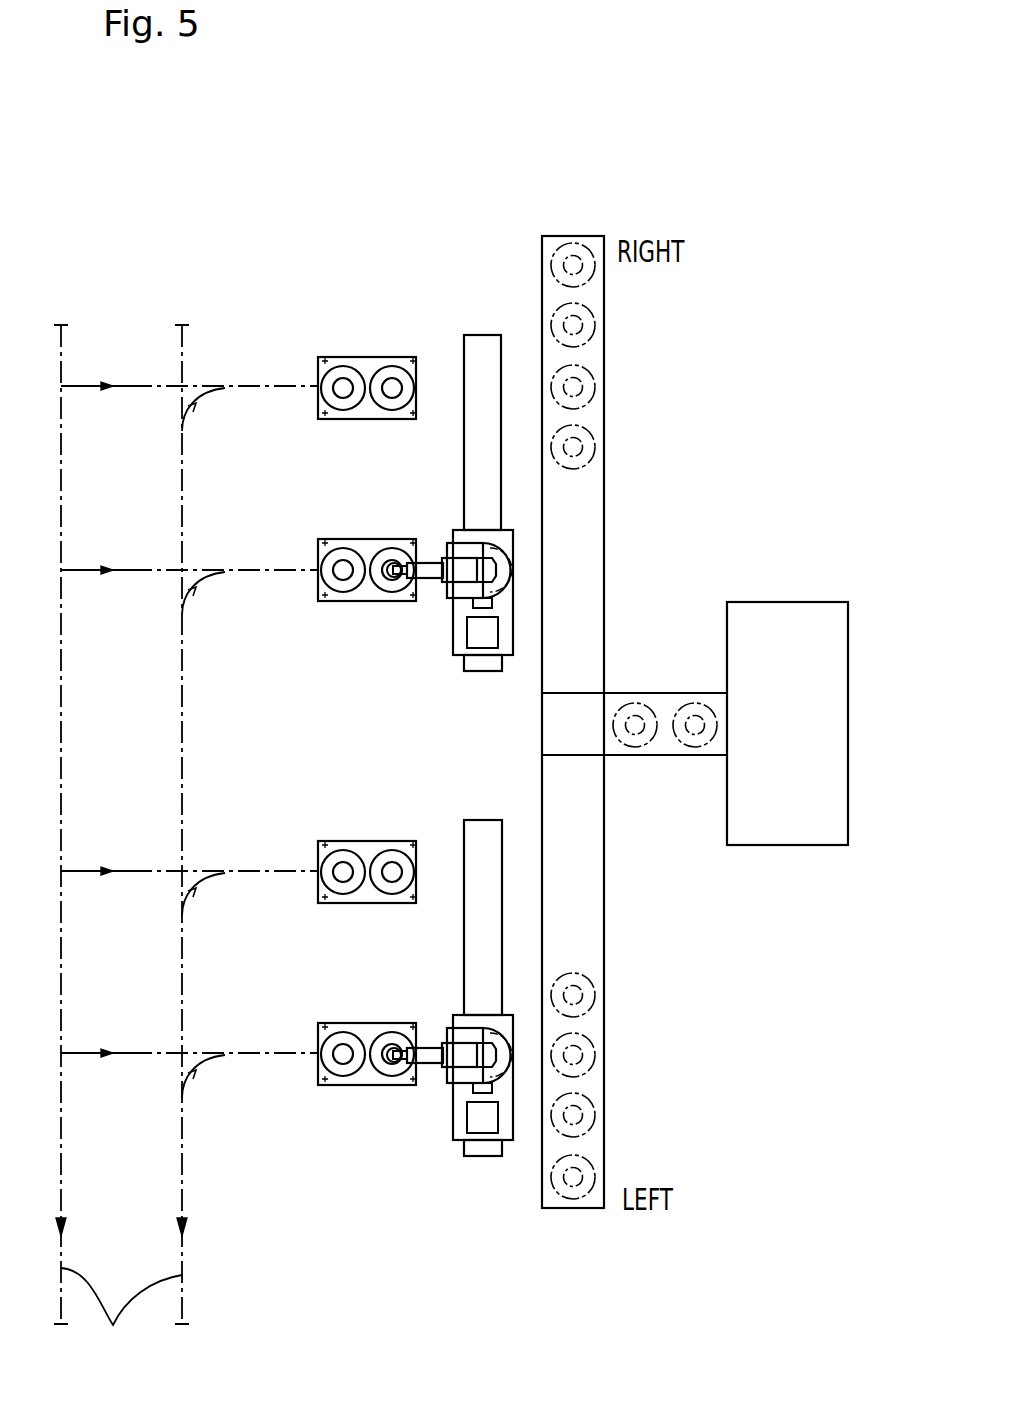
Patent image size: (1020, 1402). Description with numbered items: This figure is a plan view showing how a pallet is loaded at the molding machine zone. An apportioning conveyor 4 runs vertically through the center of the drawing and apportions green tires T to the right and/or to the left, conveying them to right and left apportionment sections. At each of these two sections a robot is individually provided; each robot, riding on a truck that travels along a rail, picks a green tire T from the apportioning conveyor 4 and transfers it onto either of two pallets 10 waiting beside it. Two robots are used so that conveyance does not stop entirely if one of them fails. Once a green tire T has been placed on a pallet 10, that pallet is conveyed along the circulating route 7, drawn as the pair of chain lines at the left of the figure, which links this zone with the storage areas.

The apportioning conveyor 4 is at (606, 552).
The second circulating route 7 is at (121, 844).
The pallet 10 is at (350, 604).
The green tire T is at (587, 430).